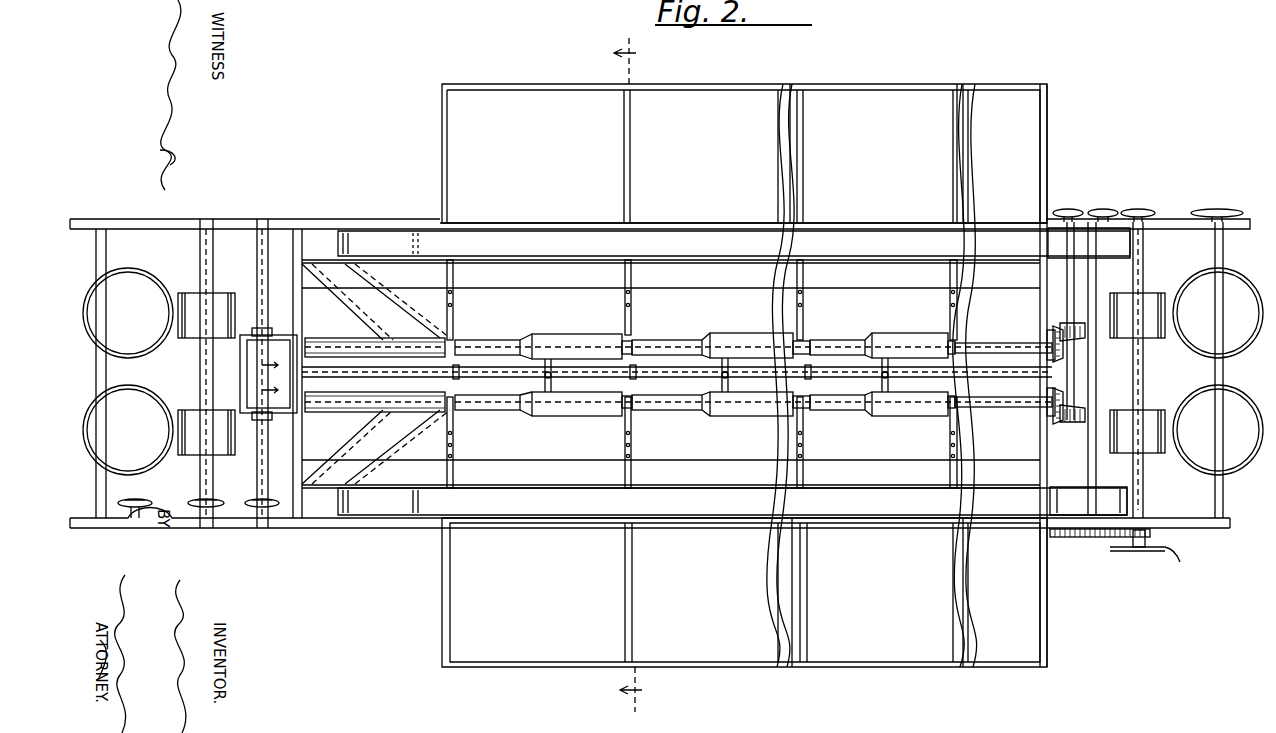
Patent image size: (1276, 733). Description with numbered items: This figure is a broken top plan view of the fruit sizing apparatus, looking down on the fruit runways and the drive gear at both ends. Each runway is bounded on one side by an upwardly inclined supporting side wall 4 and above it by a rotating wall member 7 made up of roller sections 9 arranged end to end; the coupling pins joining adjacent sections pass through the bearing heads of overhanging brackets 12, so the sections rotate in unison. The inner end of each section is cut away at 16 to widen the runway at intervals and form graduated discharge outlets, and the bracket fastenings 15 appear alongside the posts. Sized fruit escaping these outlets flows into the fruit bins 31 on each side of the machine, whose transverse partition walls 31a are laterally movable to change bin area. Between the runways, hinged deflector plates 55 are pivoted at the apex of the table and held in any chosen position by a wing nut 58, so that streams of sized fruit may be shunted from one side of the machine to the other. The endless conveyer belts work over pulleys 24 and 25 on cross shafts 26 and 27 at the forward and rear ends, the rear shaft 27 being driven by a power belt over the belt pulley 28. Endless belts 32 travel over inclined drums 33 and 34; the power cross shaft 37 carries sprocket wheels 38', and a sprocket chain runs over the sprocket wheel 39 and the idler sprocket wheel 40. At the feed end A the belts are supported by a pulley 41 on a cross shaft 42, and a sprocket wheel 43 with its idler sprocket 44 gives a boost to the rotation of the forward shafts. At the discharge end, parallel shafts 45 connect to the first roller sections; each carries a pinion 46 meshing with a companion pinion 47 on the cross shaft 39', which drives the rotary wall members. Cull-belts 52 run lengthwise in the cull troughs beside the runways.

The supporting side wall 4 is at (636, 375).
The rotating wall member 7 is at (397, 405).
The roller section 9 is at (905, 416).
The overhanging bracket 12 is at (631, 425).
The bracket rivets 15 is at (806, 452).
The cut-away portion 16 is at (858, 412).
The pulley 24 is at (186, 408).
The pulley 25 is at (1124, 410).
The cross shaft 26 is at (202, 498).
The cross shaft 27 is at (1143, 277).
The belt pulley 28 is at (1179, 563).
The fruit bin 31 is at (744, 375).
The partition wall 31a is at (805, 614).
The endless belt 32 is at (270, 412).
The drum 33 is at (673, 313).
The drum 34 is at (673, 430).
The cross shaft 37 is at (1234, 370).
The sprocket wheel 38' is at (1182, 201).
The sprocket wheel 39 is at (1068, 299).
The cross shaft 39' is at (1064, 325).
The idler sprocket wheel 40 is at (1103, 208).
The pulley 41 is at (249, 375).
The cross shaft 42 is at (265, 247).
The sprocket wheel 43 is at (258, 499).
The idler sprocket 44 is at (137, 499).
The parallel shaft 45 is at (1018, 418).
The pinion 46 is at (1052, 412).
The companion pinion 47 is at (1067, 425).
The cull-belt 52 is at (734, 371).
The deflector plate 55 is at (860, 372).
The wing nut 58 is at (888, 375).
The head end A is at (229, 165).